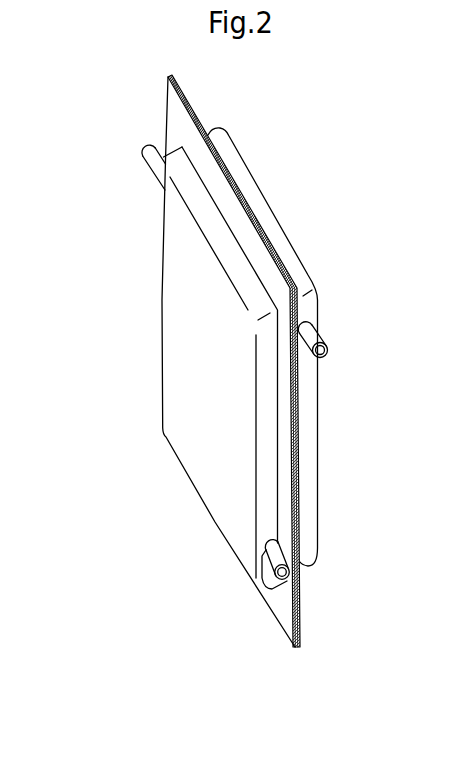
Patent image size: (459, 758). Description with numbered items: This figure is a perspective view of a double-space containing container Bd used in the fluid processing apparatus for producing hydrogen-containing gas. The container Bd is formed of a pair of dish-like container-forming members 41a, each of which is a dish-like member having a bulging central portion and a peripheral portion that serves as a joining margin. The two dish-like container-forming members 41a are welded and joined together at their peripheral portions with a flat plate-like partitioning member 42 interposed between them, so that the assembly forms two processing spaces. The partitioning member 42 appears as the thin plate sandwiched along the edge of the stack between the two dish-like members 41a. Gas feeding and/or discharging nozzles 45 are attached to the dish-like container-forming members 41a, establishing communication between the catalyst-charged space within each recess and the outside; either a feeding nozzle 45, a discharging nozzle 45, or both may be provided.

The double-space containing container Bd is at (303, 157).
The dish-like container-forming member 41a is at (180, 298).
The partitioning member 42 is at (299, 473).
The gas feeding and/or discharging nozzle 45 is at (155, 159).